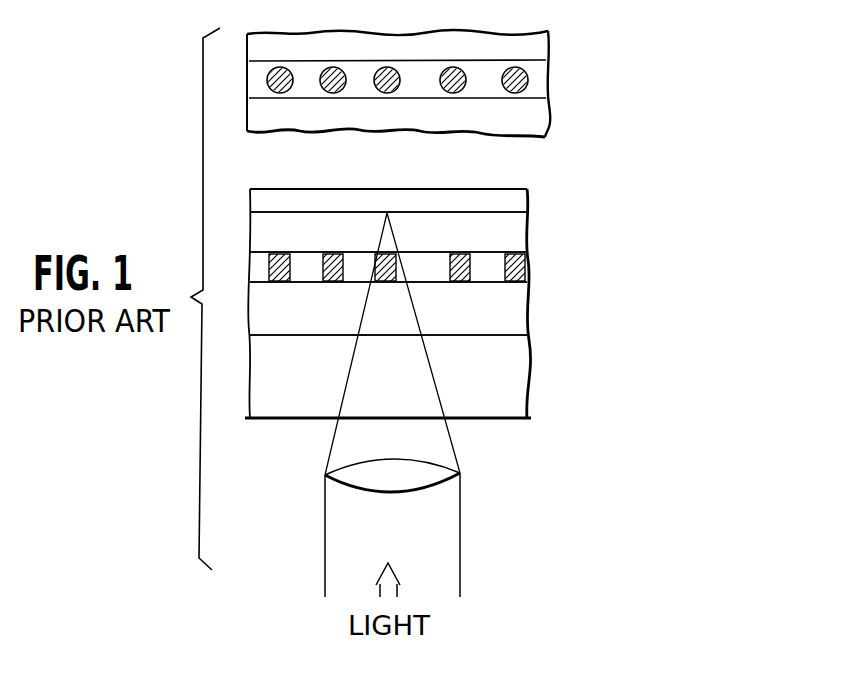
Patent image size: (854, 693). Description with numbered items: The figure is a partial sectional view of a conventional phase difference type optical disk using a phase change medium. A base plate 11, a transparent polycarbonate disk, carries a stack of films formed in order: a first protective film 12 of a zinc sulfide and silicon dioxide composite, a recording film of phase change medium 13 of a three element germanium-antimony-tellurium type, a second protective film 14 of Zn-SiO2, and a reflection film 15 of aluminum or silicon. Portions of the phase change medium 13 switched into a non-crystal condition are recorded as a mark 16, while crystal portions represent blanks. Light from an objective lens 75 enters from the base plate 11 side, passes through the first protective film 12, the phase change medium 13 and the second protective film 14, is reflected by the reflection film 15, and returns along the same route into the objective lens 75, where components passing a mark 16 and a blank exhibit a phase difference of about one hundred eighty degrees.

The base plate 11 is at (510, 396).
The first protective film 12 is at (512, 312).
The phase change medium 13 is at (530, 270).
The second protective film 14 is at (512, 238).
The reflection film 15 is at (515, 202).
The mark 16 is at (464, 78).
The objective lens 75 is at (440, 478).